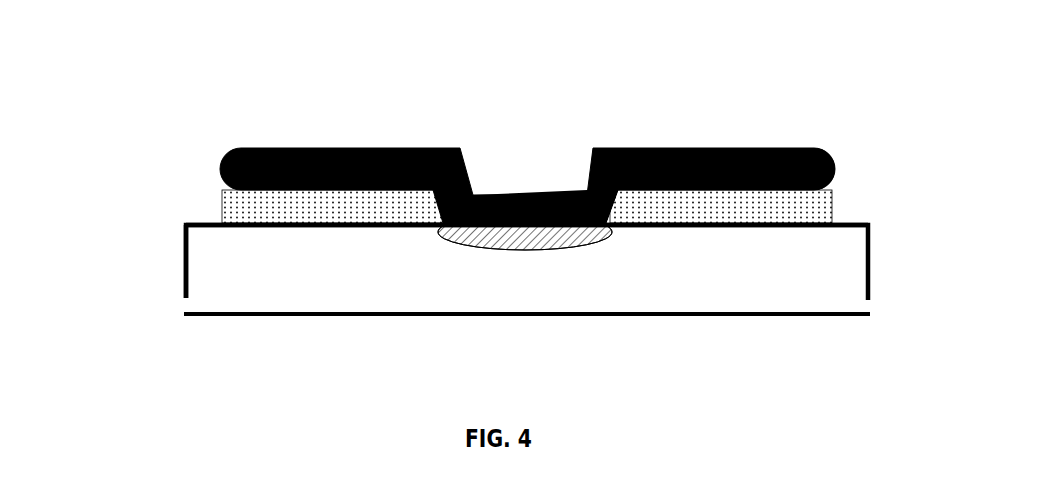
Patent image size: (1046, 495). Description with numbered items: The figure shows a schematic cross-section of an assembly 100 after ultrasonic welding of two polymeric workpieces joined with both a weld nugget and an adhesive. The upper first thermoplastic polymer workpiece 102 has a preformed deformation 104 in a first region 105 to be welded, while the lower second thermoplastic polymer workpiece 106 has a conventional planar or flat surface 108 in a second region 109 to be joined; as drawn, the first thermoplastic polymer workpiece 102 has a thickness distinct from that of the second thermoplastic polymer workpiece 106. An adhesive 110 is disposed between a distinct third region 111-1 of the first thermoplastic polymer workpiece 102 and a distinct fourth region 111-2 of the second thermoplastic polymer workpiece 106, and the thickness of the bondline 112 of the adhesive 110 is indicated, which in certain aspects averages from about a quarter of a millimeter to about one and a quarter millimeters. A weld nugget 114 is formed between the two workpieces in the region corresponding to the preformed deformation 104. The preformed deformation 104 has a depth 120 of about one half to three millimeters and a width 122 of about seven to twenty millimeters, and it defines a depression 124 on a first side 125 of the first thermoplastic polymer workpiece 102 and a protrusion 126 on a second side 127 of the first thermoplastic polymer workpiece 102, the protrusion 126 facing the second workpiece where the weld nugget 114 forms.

The assembly 100 is at (138, 108).
The first thermoplastic polymer workpiece 102 is at (272, 148).
The preformed deformation 104 is at (440, 212).
The first region 105 is at (257, 190).
The second thermoplastic polymer workpiece 106 is at (527, 269).
The planar surface 108 is at (210, 223).
The second region 109 is at (287, 227).
The adhesive 110 is at (700, 208).
The third region 111-1 is at (470, 224).
The fourth region 111-2 is at (494, 252).
The bondline 112 is at (915, 148).
The weld nugget 114 is at (573, 230).
The depth 120 is at (562, 143).
The width 122 is at (600, 127).
The depression 124 is at (483, 193).
The first side 125 is at (808, 139).
The protrusion 126 is at (608, 226).
The second side 127 is at (808, 197).